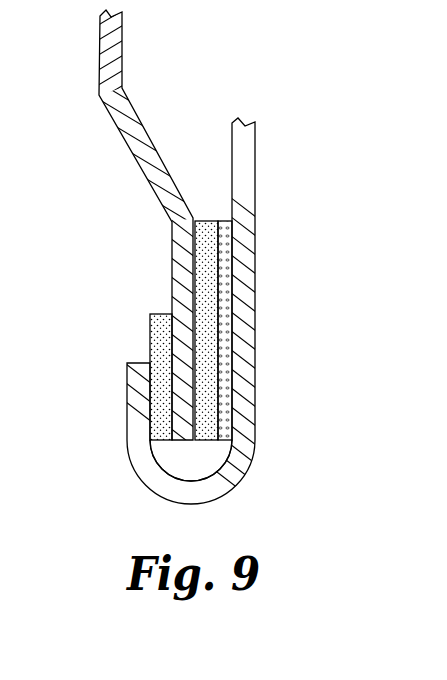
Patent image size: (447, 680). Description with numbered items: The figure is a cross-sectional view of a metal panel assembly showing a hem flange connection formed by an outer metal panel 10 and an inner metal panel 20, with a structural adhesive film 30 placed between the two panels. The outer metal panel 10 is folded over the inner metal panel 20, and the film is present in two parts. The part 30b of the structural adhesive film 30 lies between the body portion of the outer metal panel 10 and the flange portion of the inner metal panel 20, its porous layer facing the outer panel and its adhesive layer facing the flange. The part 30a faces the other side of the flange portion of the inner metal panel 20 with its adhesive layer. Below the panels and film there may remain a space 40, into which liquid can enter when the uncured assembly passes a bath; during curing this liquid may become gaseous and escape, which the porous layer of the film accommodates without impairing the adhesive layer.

The outer metal panel 10 is at (240, 190).
The inner metal panel 20 is at (103, 43).
The structural adhesive film 30 is at (151, 287).
The part of the structural adhesive film 30a is at (208, 208).
The part of the structural adhesive film 30b is at (152, 301).
The space 40 is at (196, 465).